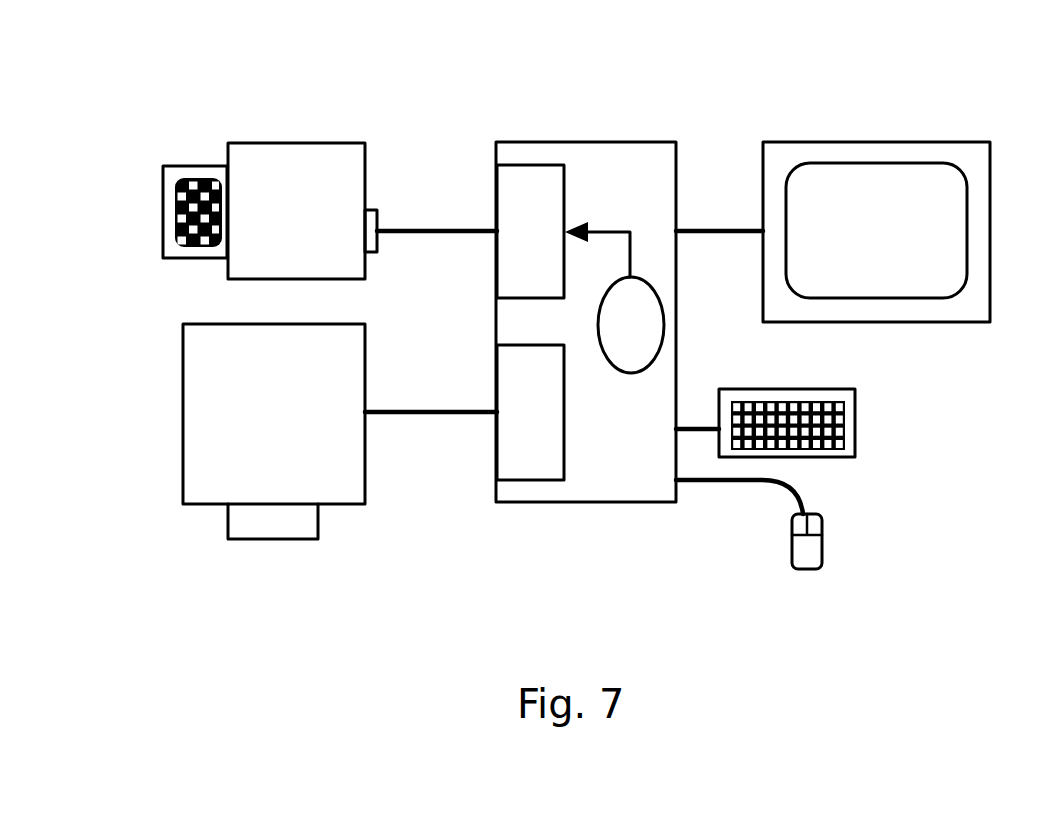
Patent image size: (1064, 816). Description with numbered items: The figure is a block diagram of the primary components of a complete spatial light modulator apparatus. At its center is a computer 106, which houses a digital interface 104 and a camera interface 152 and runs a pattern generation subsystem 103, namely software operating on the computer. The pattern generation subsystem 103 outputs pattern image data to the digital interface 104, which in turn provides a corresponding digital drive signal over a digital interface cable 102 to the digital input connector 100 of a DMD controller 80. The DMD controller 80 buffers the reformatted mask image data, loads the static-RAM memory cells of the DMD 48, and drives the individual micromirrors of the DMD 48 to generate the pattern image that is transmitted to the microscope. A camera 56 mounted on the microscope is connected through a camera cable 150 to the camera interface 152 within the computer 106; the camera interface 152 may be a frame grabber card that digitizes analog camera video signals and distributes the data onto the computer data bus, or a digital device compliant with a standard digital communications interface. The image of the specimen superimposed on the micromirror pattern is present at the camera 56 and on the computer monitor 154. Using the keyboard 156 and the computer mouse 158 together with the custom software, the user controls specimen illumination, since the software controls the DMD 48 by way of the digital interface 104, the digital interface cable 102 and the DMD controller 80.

The DMD 48 is at (175, 166).
The camera 56 is at (183, 488).
The DMD controller 80 is at (287, 143).
The digital input connector 100 is at (373, 208).
The digital interface cable 102 is at (437, 228).
The pattern generation subsystem 103 is at (610, 367).
The digital interface 104 is at (566, 207).
The computer 106 is at (677, 200).
The camera cable 150 is at (418, 415).
The camera interface 152 is at (586, 367).
The computer monitor 154 is at (958, 142).
The keyboard 156 is at (855, 428).
The computer mouse 158 is at (824, 560).